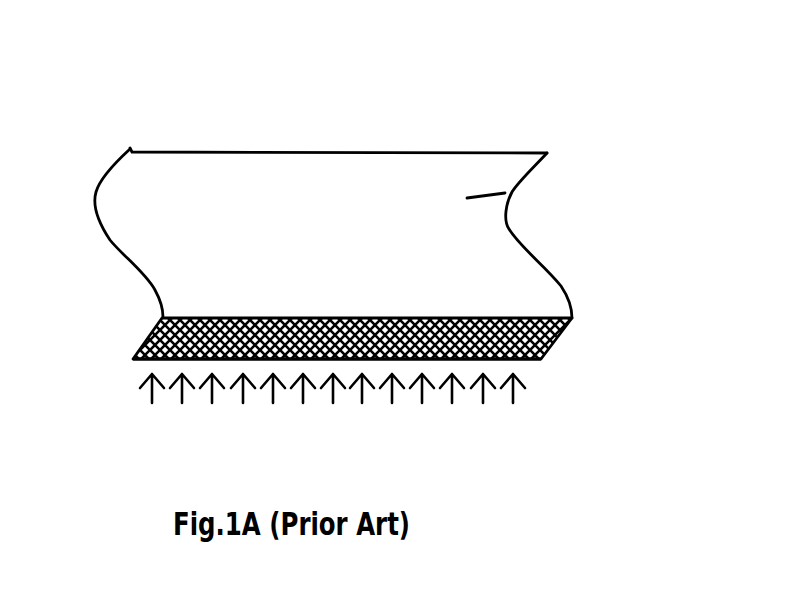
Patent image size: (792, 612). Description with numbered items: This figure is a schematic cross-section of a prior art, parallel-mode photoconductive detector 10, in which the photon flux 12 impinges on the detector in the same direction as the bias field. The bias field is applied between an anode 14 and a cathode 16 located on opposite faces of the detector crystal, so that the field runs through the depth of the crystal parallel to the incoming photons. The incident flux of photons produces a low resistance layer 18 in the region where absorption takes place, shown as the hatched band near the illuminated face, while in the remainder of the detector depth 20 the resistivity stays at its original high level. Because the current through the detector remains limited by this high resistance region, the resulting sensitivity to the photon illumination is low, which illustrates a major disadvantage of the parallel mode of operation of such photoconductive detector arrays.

The photoconductive detector 10 is at (487, 135).
The photon flux 12 is at (332, 406).
The anode 14 is at (175, 152).
The cathode 16 is at (133, 360).
The low resistance layer 18 is at (571, 330).
The remainder of the detector depth 20 is at (505, 193).